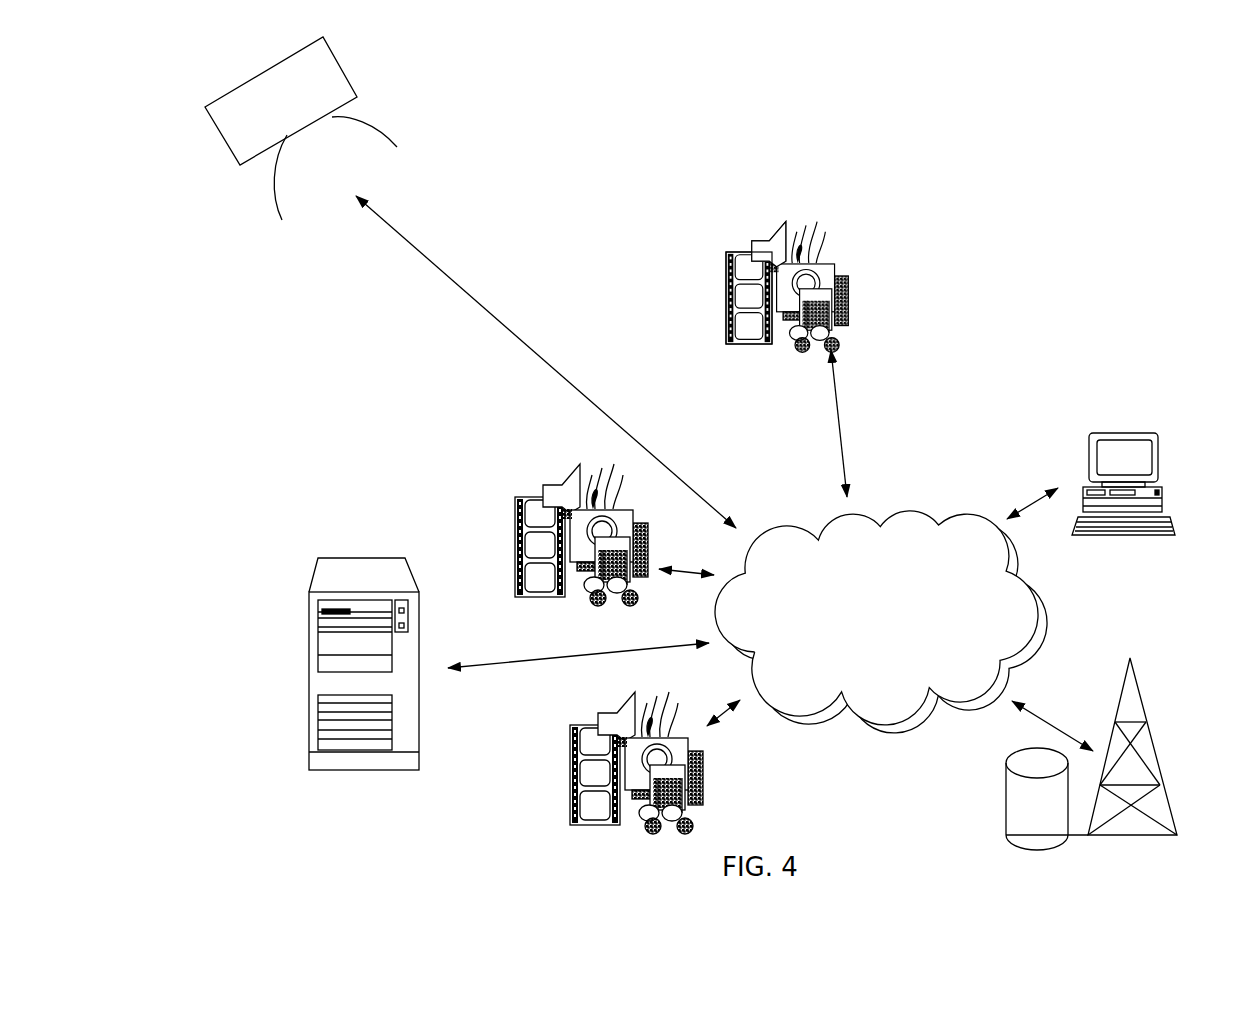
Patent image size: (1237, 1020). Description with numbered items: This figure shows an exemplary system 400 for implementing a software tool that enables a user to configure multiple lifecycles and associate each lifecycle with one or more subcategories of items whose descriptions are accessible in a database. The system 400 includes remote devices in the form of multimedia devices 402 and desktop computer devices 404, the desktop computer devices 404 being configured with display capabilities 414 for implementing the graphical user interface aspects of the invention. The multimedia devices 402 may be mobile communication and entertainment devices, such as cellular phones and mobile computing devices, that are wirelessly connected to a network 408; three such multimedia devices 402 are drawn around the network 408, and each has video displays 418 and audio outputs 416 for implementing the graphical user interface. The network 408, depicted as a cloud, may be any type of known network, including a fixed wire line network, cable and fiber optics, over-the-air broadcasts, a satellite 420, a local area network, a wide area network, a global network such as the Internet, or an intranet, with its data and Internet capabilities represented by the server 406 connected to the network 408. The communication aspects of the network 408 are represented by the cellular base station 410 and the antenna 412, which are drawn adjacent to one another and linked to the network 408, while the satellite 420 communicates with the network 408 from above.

The system 400 is at (952, 199).
The multimedia devices 402 is at (642, 507).
The desktop computer devices 404 is at (1143, 473).
The server 406 is at (312, 703).
The network 408 is at (857, 702).
The cellular base station 410 is at (1006, 818).
The antenna 412 is at (1105, 748).
The display capabilities 414 is at (1131, 452).
The audio outputs 416 is at (780, 230).
The video displays 418 is at (730, 297).
The satellite 420 is at (225, 138).